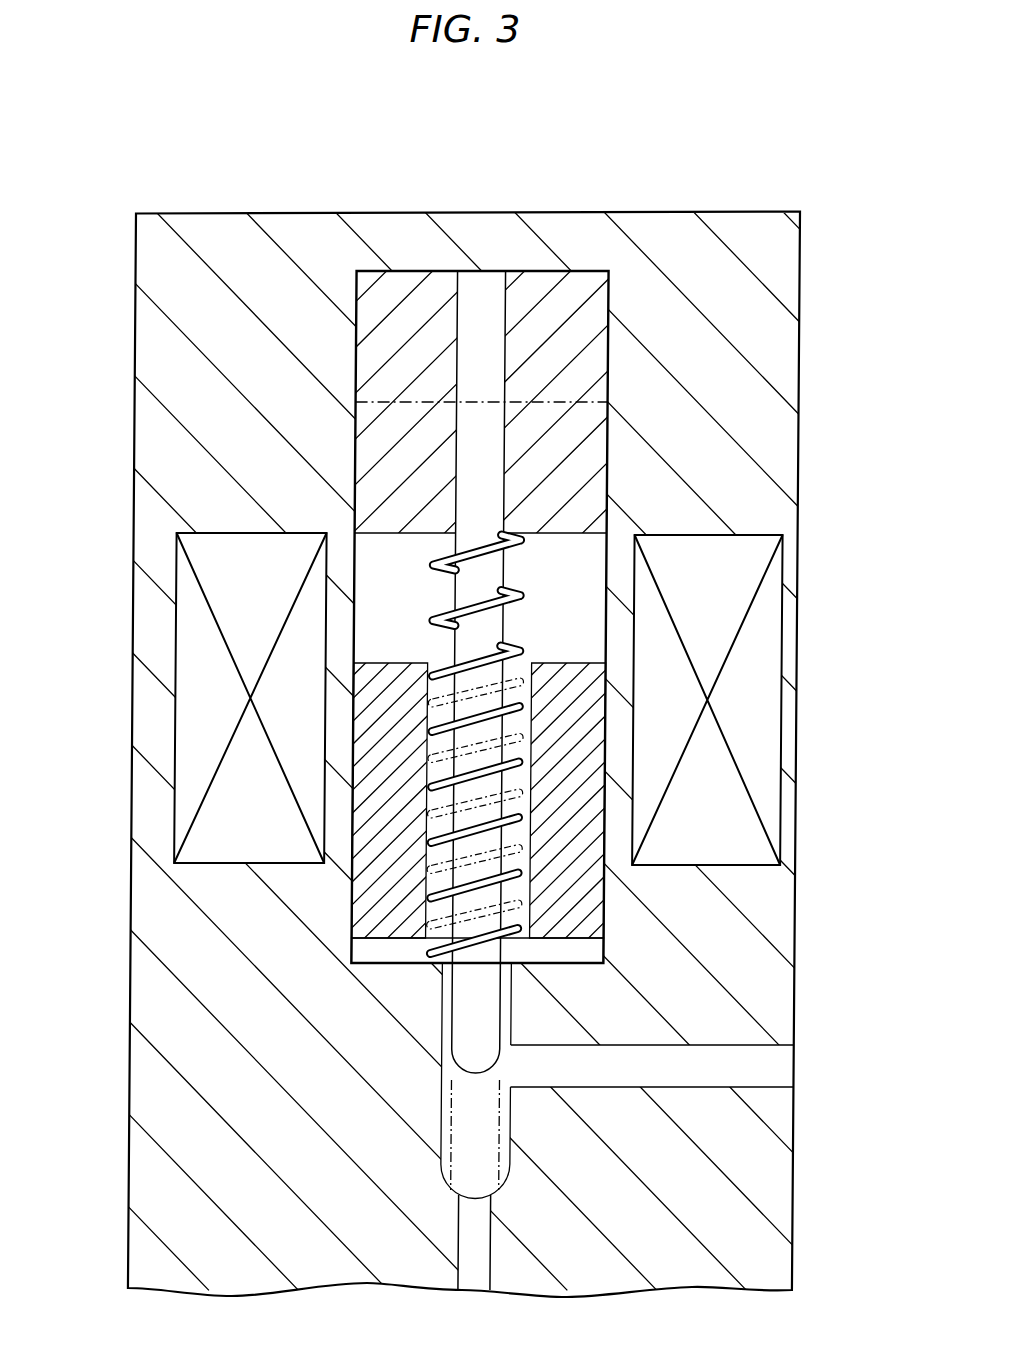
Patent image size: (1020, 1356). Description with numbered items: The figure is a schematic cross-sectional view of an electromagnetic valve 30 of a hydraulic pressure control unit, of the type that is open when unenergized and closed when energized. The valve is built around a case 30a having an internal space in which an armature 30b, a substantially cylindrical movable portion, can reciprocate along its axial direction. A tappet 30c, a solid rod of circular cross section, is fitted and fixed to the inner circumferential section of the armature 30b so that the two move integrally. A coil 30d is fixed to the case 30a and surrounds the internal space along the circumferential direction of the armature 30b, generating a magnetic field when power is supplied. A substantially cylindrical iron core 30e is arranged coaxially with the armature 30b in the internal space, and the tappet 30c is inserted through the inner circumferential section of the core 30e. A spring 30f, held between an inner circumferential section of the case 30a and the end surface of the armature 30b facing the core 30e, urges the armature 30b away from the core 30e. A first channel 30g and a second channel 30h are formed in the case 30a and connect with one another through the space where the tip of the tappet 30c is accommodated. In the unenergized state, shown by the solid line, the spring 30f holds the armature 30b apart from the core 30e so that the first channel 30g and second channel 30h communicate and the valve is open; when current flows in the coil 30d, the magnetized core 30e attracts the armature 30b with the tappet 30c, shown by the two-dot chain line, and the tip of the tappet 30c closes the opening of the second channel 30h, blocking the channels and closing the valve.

The electromagnetic valve 30 is at (140, 158).
The case 30a is at (158, 243).
The armature 30b is at (385, 365).
The tappet 30c is at (470, 303).
The coil 30d is at (193, 606).
The core 30e is at (373, 912).
The spring 30f is at (443, 893).
The first channel 30g is at (578, 1066).
The second channel 30h is at (473, 1252).